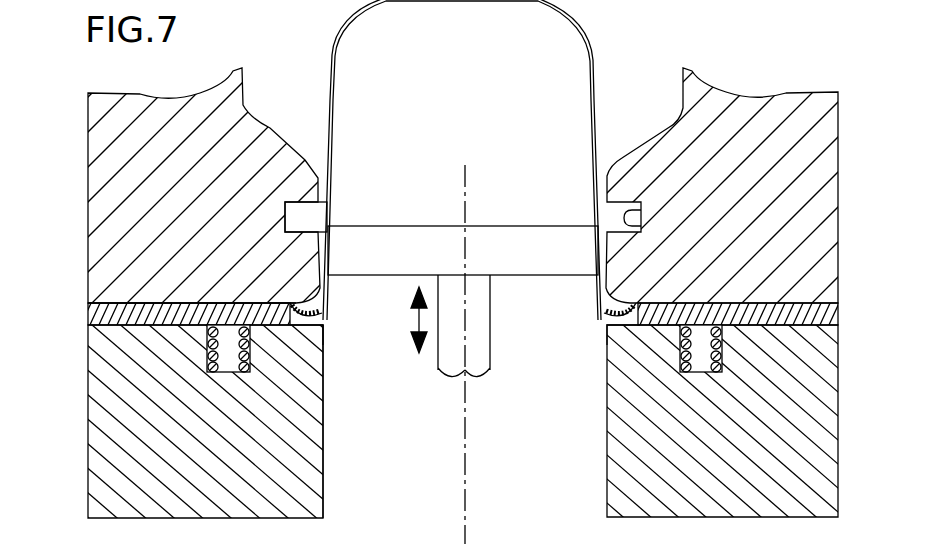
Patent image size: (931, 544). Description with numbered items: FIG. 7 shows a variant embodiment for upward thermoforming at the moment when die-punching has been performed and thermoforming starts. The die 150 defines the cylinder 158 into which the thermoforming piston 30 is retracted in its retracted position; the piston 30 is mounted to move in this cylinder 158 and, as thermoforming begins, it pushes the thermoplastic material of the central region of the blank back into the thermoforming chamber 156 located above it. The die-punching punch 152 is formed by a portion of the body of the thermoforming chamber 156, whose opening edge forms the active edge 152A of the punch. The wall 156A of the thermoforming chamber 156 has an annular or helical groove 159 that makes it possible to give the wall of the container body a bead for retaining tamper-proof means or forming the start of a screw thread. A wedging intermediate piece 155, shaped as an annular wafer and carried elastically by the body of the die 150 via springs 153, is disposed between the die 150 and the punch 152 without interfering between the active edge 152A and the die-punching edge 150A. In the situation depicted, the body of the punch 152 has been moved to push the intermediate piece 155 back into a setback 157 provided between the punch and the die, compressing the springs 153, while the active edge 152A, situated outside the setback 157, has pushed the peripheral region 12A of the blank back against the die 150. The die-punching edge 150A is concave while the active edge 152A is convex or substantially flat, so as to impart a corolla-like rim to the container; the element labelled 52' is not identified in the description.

The die-punching punch 152 is at (118, 213).
The wedging intermediate piece 155 is at (128, 303).
The setback 157 is at (130, 316).
The die 150 is at (116, 422).
The springs 153 is at (250, 352).
The cylinder 158 is at (323, 465).
The die-punching active edge 150A is at (310, 330).
The active edge of the punch 152A is at (307, 298).
The wall of the thermoforming chamber 156A is at (323, 197).
The thermoforming chamber 156 is at (648, 111).
The thermoforming piston 30 is at (541, 238).
The annular or helical groove 159 is at (643, 218).
The seal 52' is at (584, 302).
The peripheral region of the blank 12A is at (618, 332).